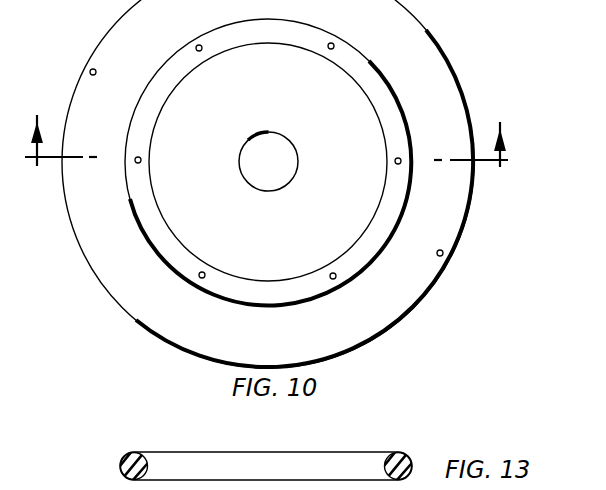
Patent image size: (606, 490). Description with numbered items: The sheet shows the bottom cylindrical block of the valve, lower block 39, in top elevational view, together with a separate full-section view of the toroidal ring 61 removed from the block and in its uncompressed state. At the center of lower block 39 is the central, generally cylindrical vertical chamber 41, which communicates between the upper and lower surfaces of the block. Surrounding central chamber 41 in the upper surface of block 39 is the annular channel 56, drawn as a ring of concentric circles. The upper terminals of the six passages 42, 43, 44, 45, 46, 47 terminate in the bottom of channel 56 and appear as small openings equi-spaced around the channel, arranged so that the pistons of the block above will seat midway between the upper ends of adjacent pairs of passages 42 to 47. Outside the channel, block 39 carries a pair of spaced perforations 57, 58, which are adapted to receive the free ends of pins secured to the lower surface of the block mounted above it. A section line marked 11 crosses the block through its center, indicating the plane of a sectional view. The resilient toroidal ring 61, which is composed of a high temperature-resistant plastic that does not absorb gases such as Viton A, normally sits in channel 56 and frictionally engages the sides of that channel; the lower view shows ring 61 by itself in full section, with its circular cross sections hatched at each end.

In FIG. 10, the section line 11- 11 is at (264, 154).
In FIG. 10, the lower block 39 is at (95, 274).
In FIG. 10, the central vertical chamber 41 is at (289, 182).
In FIG. 10, the passage 42 is at (333, 273).
In FIG. 10, the passage 43 is at (395, 161).
In FIG. 10, the passage 44 is at (330, 49).
In FIG. 10, the passage 45 is at (202, 50).
In FIG. 10, the passage 46 is at (141, 160).
In FIG. 10, the passage 47 is at (203, 272).
In FIG. 10, the annular channel 56 is at (133, 113).
In FIG. 10, the perforation 57 is at (439, 256).
In FIG. 10, the perforation 58 is at (95, 70).
In FIG. 13, the toroidal ring 61 is at (183, 452).